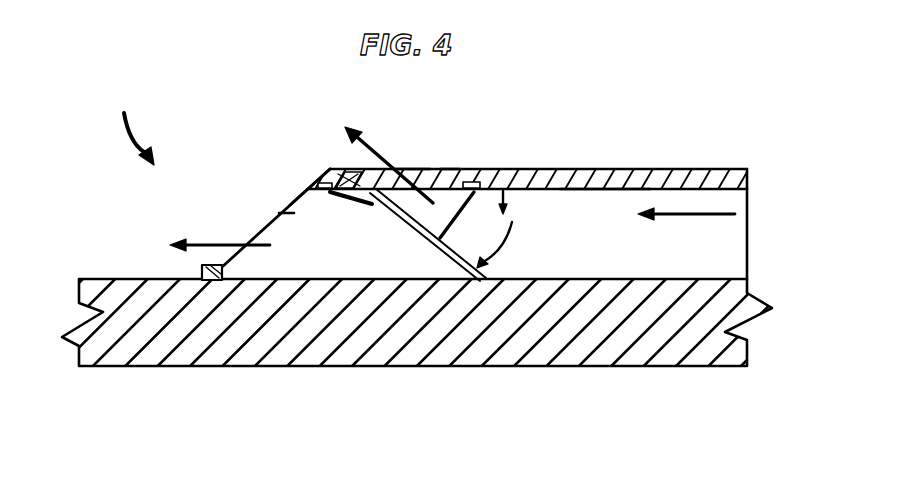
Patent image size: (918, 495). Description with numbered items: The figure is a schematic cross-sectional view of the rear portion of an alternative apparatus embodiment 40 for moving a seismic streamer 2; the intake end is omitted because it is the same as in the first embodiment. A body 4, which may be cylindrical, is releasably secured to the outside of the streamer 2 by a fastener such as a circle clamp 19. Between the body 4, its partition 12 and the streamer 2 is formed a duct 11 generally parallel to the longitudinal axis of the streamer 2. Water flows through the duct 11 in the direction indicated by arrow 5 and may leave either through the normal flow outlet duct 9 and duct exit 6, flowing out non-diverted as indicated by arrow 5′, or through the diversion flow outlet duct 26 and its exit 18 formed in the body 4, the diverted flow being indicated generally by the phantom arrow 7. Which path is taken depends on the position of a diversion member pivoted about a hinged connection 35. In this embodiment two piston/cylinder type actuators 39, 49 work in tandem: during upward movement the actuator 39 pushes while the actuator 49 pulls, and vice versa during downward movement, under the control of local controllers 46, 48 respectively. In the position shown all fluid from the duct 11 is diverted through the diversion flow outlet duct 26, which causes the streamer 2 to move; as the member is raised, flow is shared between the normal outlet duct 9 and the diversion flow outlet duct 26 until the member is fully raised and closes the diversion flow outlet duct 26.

The streamer 2 is at (477, 334).
The body 4 is at (662, 168).
The arrow denoting direction of water travel 5 is at (704, 213).
The arrow indicating non-diverted fluid flow 5′ is at (210, 245).
The duct exit 6 is at (280, 213).
The phantom arrow indicating diverted fluid flow 7 is at (381, 152).
The normal flow outlet duct 9 is at (300, 196).
The duct 11 is at (604, 205).
The partition 12 is at (250, 230).
The duct exit 18 is at (410, 168).
The circle clamp 19 is at (213, 280).
The diversion flow outlet duct 26 is at (447, 168).
The hinged connection 35 is at (340, 169).
The piston/cylinder type actuator 39 is at (346, 207).
The alternative apparatus embodiment 40 is at (131, 127).
The local controller 46 is at (320, 191).
The local controller 48 is at (478, 181).
The piston/cylinder type actuator 49 is at (505, 227).